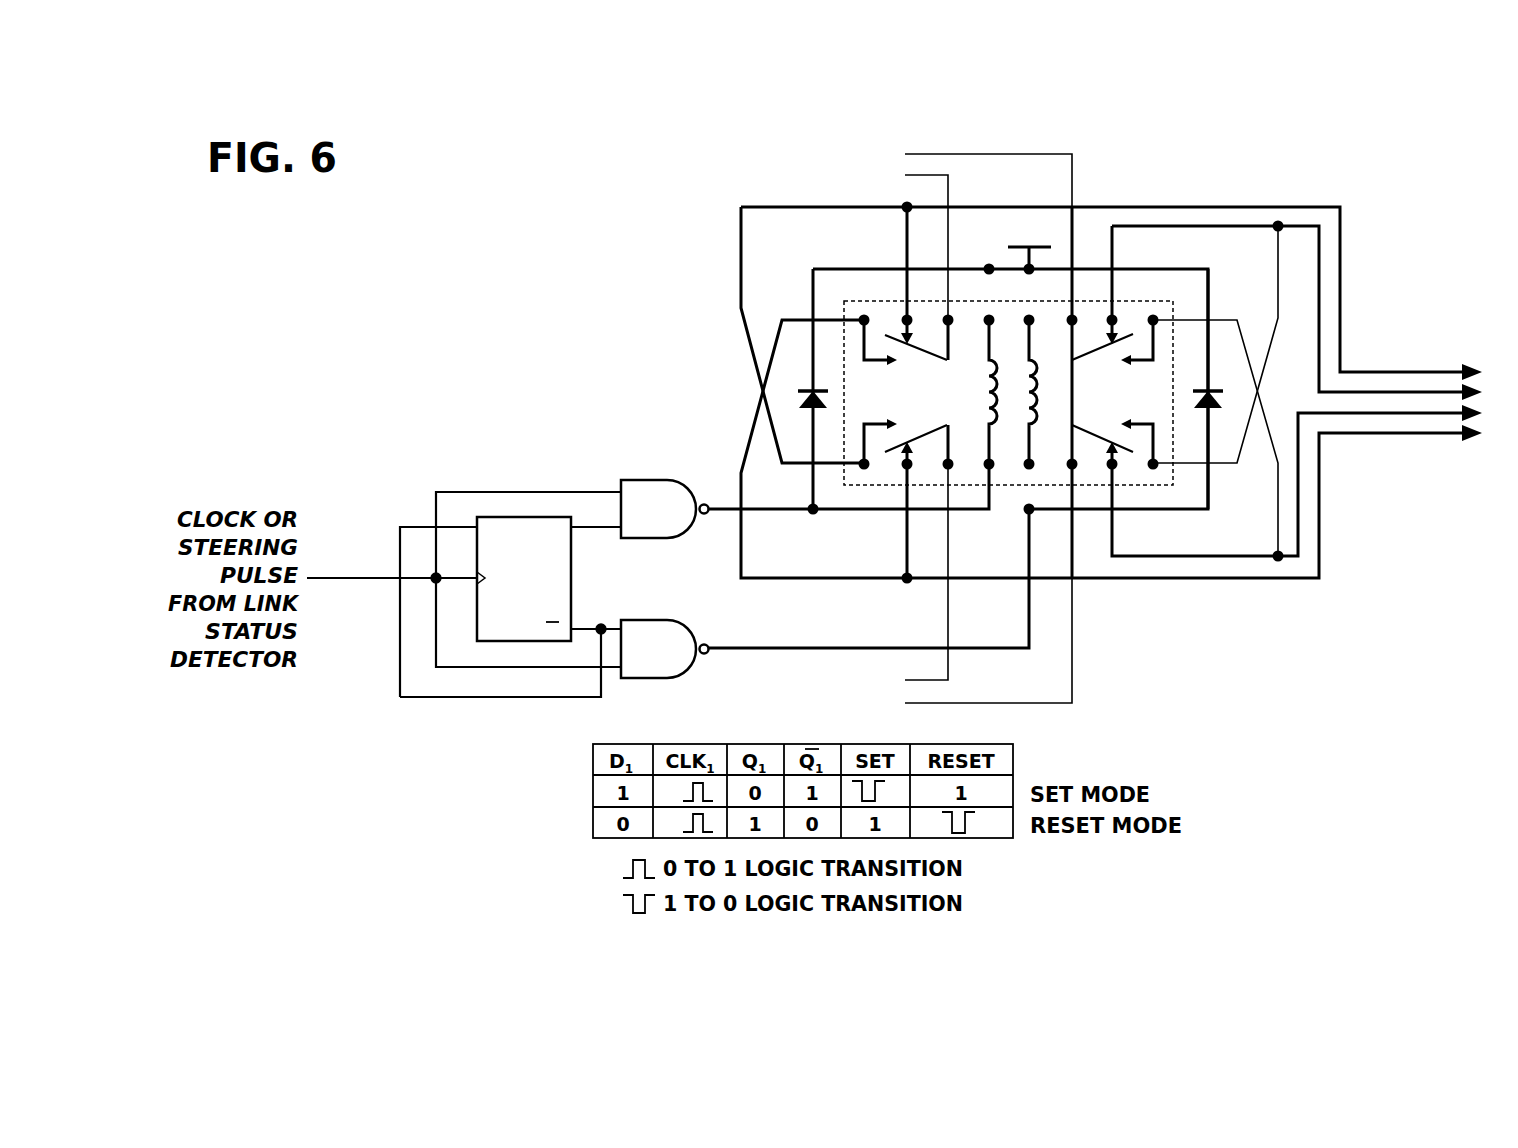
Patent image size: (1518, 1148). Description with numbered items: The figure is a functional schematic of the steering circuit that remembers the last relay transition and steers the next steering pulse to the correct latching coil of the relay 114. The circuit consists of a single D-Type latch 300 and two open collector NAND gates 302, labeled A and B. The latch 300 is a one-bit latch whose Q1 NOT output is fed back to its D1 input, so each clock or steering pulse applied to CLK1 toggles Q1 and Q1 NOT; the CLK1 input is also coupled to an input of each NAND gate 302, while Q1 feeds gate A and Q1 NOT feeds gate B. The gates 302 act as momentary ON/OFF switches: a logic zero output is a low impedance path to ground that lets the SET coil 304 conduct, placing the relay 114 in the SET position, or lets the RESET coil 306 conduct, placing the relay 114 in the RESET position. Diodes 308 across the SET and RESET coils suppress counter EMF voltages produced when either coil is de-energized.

The electromechanical device 114 is at (697, 277).
The D-Type latch 300 is at (516, 496).
The NAND gates 302 is at (647, 477).
The SET coil 304 is at (995, 395).
The RESET coil 306 is at (1040, 402).
The diodes 308 is at (783, 389).